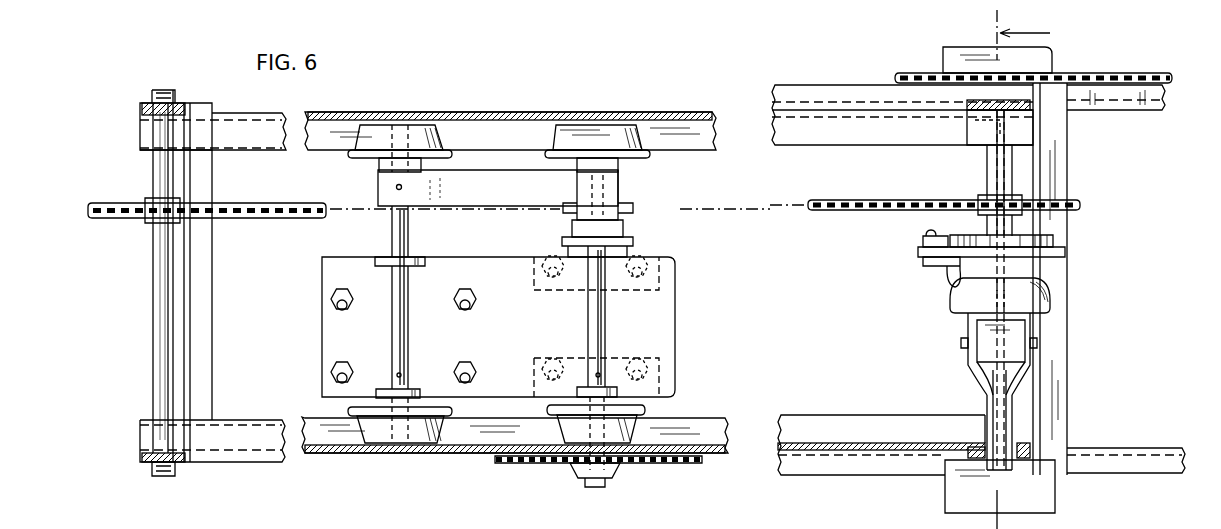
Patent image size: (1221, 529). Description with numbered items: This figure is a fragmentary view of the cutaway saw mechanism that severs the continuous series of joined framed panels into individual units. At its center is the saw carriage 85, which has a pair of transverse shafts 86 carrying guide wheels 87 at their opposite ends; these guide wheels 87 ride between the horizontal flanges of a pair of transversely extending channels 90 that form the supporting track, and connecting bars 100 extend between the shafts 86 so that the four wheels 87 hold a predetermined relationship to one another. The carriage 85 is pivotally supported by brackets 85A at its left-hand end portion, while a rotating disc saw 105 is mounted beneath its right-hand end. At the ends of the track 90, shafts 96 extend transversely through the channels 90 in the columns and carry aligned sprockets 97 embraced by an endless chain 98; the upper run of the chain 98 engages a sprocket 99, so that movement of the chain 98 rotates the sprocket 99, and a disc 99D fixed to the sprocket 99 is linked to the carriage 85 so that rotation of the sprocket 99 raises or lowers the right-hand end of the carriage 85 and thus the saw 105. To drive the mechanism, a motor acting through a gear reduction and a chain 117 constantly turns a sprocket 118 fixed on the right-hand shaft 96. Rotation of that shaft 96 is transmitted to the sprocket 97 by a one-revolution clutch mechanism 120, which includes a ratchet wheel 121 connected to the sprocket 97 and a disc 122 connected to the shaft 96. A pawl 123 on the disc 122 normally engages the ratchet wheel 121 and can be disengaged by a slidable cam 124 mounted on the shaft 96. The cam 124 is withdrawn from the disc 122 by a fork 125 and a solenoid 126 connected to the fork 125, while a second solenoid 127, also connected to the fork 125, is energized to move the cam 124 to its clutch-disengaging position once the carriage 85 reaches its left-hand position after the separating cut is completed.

The saw carriage 85 is at (476, 260).
The brackets 85A is at (418, 258).
The transverse shafts 86 is at (408, 330).
The guide wheels 87 is at (583, 128).
The channels 90 is at (332, 455).
The shafts 96 is at (158, 312).
The sprockets 97 is at (108, 222).
The endless chain 98 is at (284, 220).
The sprocket 99 is at (670, 113).
The disc 99D is at (640, 241).
The connecting bars 100 is at (509, 192).
The rotating disc saw 105 is at (645, 463).
The chain 117 is at (1172, 102).
The sprocket 118 is at (1085, 73).
The one-revolution clutch mechanism 120 is at (1080, 290).
The ratchet wheel 121 is at (1053, 242).
The disc 122 is at (1065, 262).
The pawl 123 is at (920, 243).
The slidable cam 124 is at (1052, 300).
The fork 125 is at (1035, 362).
The solenoid 126 is at (943, 56).
The solenoid 127 is at (1050, 492).